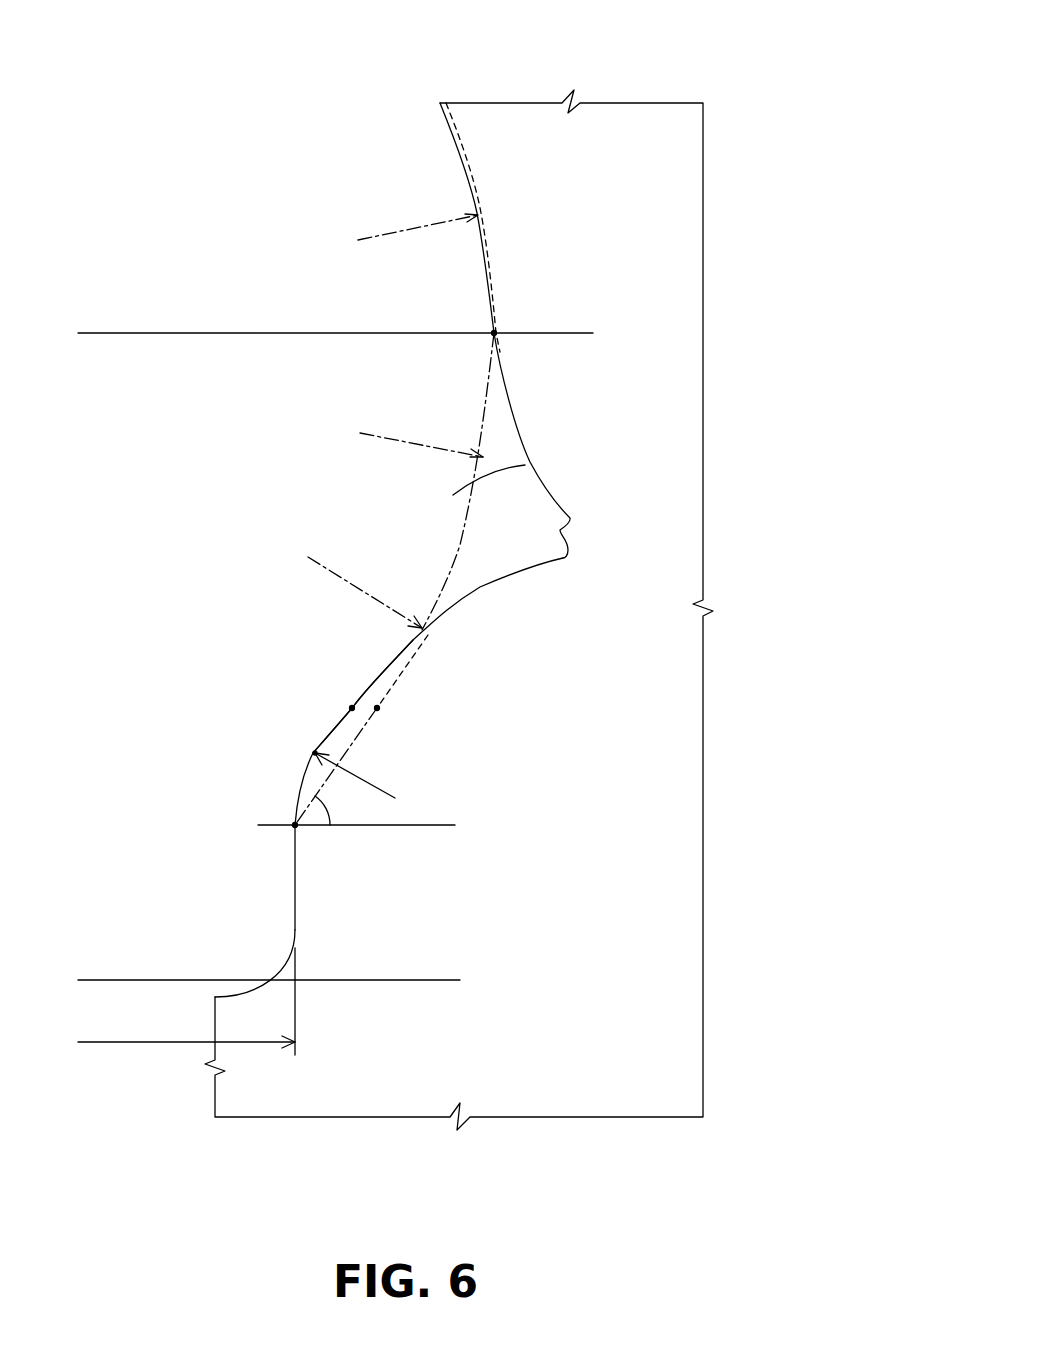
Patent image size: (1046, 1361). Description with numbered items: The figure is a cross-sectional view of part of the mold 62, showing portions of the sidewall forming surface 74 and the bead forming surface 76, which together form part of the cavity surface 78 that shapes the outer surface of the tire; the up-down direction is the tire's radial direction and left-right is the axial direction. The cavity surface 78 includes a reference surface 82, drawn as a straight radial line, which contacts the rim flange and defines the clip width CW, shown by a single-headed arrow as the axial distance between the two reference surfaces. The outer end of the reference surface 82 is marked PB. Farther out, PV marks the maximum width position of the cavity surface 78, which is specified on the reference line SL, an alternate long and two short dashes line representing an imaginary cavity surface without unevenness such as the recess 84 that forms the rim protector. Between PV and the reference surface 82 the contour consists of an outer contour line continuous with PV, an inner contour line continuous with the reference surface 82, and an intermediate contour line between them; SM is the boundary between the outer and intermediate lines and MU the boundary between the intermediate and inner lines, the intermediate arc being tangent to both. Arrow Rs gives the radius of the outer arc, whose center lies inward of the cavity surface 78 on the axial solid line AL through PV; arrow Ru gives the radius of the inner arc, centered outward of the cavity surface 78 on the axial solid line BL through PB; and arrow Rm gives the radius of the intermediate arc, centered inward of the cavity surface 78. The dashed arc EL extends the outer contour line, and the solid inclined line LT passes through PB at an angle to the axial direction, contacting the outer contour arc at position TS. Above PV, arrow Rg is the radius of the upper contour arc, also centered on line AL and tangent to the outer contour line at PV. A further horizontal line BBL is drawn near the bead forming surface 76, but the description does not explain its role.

The mold 62 is at (636, 86).
The sidewall forming surface 74 is at (452, 147).
The bead forming surface 76 is at (278, 958).
The cavity surface 78 is at (444, 112).
The reference surface 82 is at (295, 868).
The recess 84 is at (453, 495).
The maximum width position PV is at (494, 333).
The straight line AL is at (127, 335).
The reference line SL is at (488, 393).
The boundary SM is at (452, 565).
The boundary MU is at (352, 708).
The extension line EL is at (403, 672).
The position TS is at (380, 708).
The inclined line LT is at (363, 732).
The radius of the arc representing the inner contour line Ru is at (356, 774).
The radius of the arc representing the intermediate contour line Rm is at (365, 589).
The radius of the arc representing the outer contour line Rs is at (421, 436).
The radius of the arc representing the upper contour line Rg is at (418, 220).
The outer end of the reference surface PB is at (295, 825).
The straight line BL is at (407, 827).
The bottom base line BBL is at (407, 982).
The clip width CW is at (186, 1013).